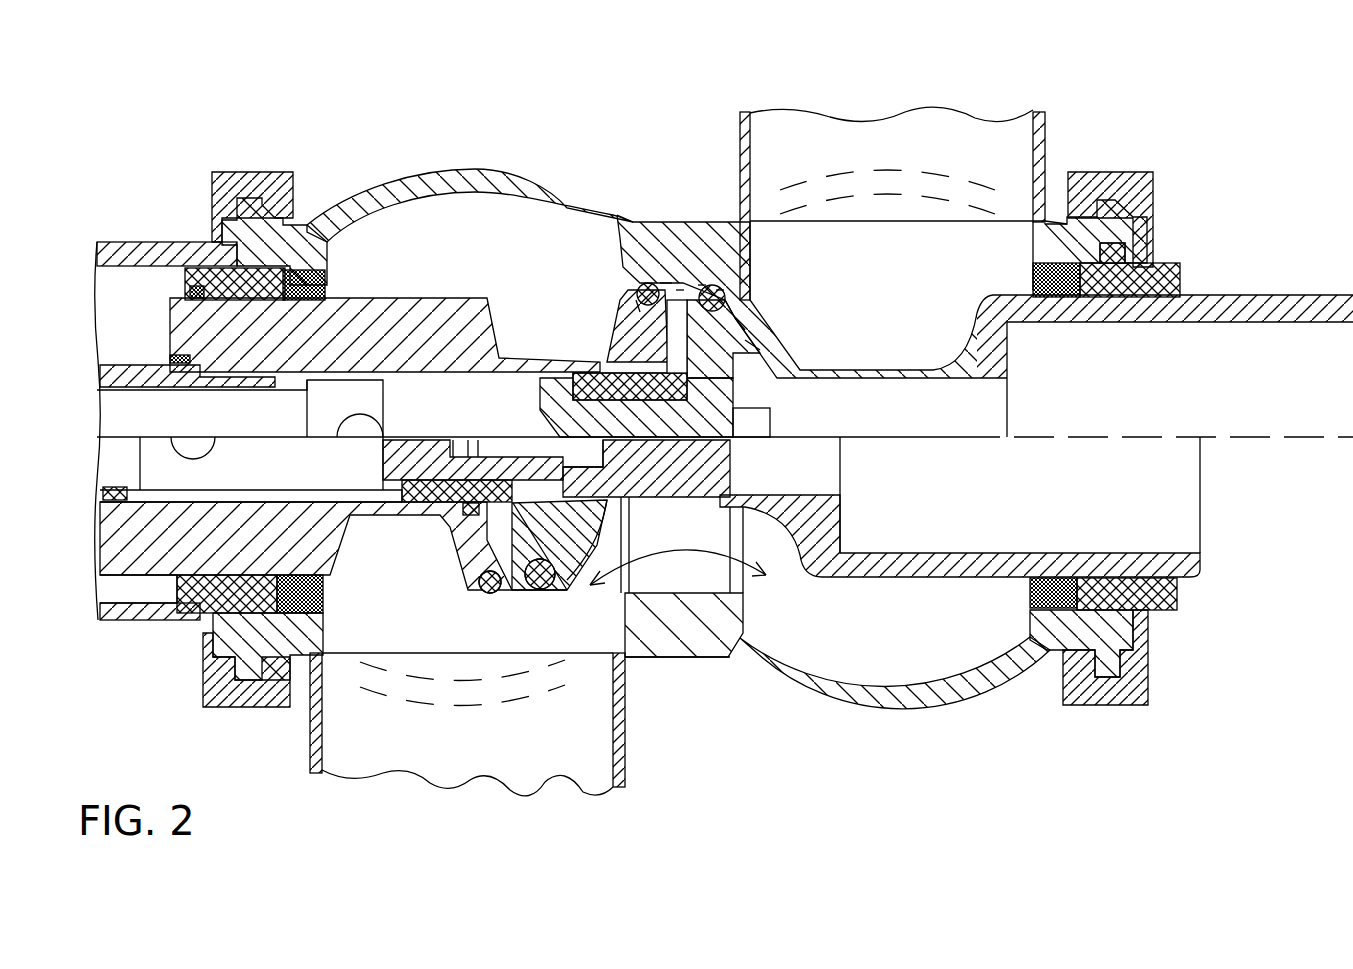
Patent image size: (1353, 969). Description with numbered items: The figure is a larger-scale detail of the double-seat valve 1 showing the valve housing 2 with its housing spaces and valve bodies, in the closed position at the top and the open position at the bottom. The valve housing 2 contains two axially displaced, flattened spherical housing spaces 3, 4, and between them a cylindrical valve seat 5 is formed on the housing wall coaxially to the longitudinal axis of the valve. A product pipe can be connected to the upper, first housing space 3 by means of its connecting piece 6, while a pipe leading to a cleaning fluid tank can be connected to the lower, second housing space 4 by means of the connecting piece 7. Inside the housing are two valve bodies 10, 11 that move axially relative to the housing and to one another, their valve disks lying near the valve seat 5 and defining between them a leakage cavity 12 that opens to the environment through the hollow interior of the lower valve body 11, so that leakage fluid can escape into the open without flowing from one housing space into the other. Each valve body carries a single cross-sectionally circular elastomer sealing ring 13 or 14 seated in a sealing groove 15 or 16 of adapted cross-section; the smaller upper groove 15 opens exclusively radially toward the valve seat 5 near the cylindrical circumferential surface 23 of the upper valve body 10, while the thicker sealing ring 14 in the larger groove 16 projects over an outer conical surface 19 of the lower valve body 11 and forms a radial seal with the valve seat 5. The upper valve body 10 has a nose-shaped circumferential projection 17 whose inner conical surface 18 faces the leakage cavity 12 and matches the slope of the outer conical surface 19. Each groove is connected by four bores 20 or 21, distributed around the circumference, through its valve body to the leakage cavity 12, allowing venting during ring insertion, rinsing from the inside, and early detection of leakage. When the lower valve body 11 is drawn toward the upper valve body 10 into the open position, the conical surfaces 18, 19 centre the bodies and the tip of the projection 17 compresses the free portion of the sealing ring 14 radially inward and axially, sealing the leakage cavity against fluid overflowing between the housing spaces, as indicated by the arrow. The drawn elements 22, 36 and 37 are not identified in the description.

The double-seat valve 1 is at (1038, 772).
The valve housing 2 is at (683, 228).
The first housing space 3 is at (488, 205).
The second housing space 4 is at (940, 655).
The valve seat 5 is at (678, 580).
The connecting piece 6 is at (312, 752).
The connecting piece 7 is at (1040, 128).
The upper valve body 10 is at (620, 333).
The lower valve body 11 is at (745, 340).
The leakage cavity 12 is at (680, 290).
The sealing ring 13 is at (665, 280).
The sealing ring 14 is at (718, 290).
The first sealing groove 15 is at (632, 306).
The second sealing groove 16 is at (727, 303).
The circumferential projection 17 is at (510, 598).
The inner conical surface 18 is at (770, 385).
The outer conical surface 19 is at (700, 285).
The bores 20 is at (640, 305).
The bores 21 is at (735, 318).
The O-ring 22 is at (528, 598).
The cylindrical circumferential surface 23 is at (485, 598).
The shaft 36 is at (152, 425).
The bushing 37 is at (135, 380).